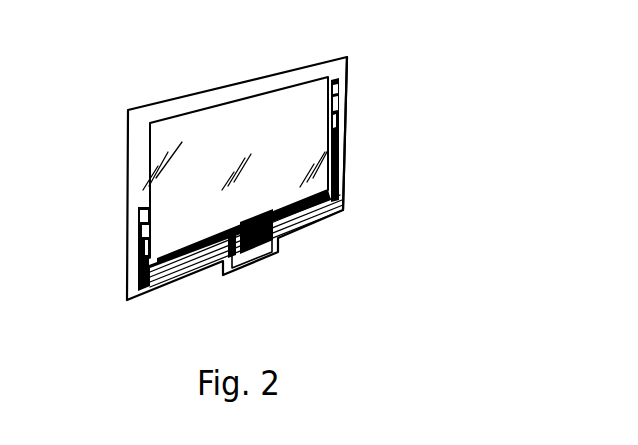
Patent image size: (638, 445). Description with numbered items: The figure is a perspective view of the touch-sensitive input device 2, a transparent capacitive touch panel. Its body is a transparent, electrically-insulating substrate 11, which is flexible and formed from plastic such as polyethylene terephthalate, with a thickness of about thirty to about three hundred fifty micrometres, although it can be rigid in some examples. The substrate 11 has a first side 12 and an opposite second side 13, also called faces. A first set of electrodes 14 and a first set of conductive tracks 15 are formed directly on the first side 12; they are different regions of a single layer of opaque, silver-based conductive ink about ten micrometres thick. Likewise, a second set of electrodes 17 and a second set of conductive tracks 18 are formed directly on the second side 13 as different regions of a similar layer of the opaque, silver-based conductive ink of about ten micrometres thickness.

The touch-sensitive input device 2 is at (283, 169).
The substrate 11 is at (136, 124).
The first side 12 is at (350, 77).
The second side 13 is at (336, 61).
The first set of electrodes 14 is at (235, 156).
The second set of electrodes 17 is at (247, 113).
The first set of conductive tracks 15 is at (246, 254).
The second set of conductive tracks 18 is at (284, 264).